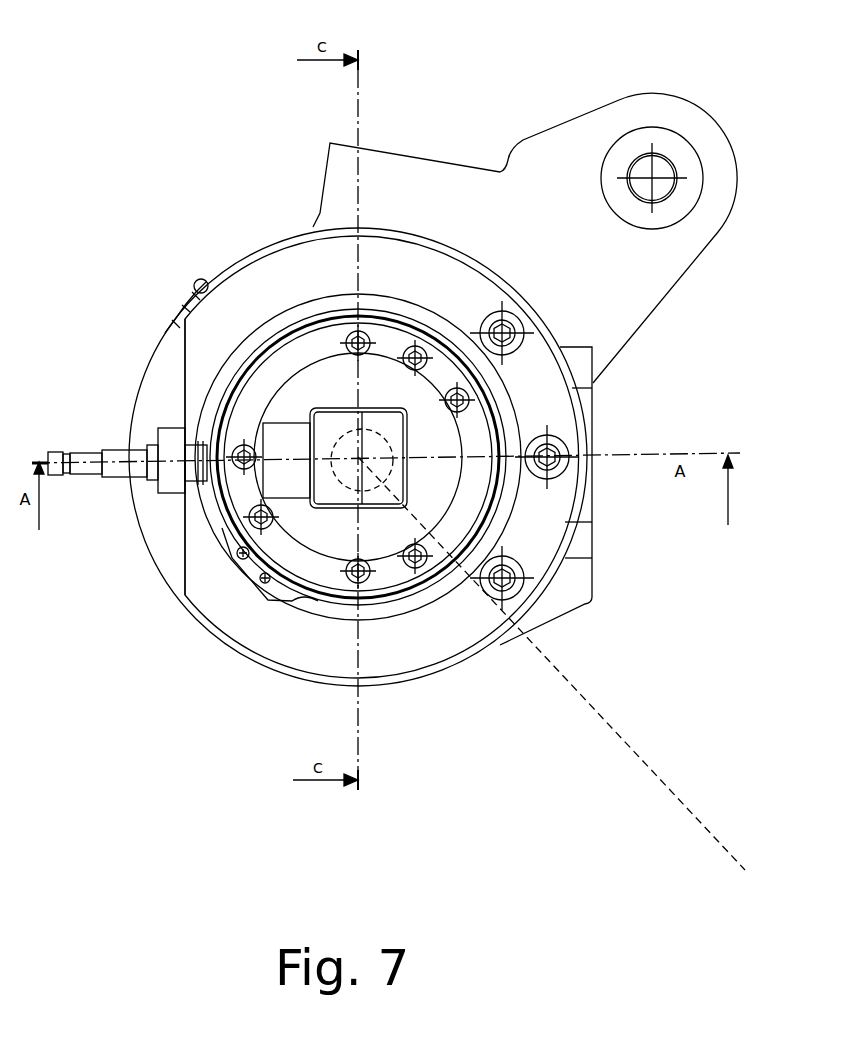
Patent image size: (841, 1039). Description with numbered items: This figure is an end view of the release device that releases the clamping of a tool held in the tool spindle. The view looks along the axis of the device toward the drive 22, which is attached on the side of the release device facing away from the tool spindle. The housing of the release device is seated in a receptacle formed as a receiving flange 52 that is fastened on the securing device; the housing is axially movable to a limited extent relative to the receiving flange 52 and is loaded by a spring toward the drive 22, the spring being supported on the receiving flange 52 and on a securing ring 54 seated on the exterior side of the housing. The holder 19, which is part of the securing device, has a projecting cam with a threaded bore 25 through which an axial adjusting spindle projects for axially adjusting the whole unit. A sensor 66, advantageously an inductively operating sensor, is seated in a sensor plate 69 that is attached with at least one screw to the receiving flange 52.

The holder 19 is at (423, 182).
The threaded bore 25 is at (652, 178).
The drive 22 is at (312, 533).
The receiving flange 52 is at (542, 512).
The securing ring 54 is at (318, 592).
The sensor 66 is at (78, 460).
The sensor plate 69 is at (177, 487).